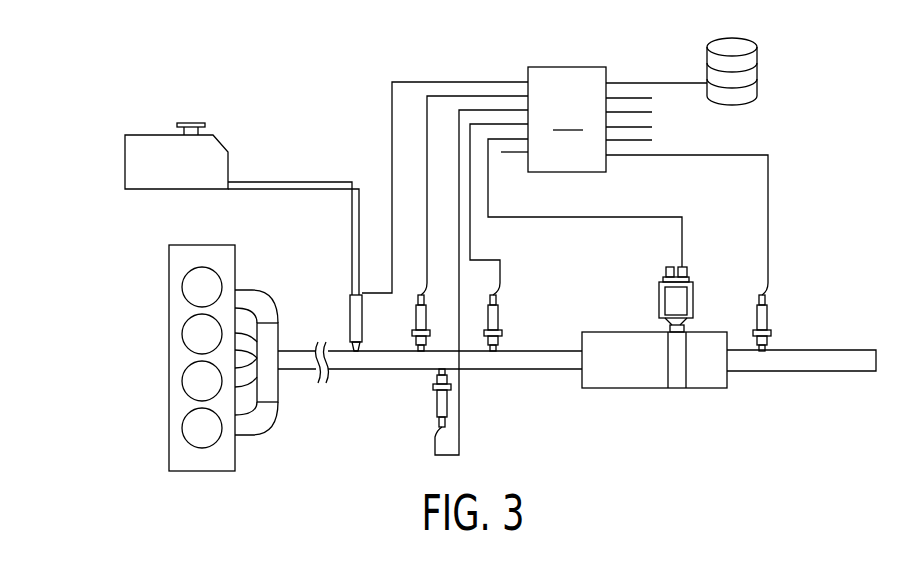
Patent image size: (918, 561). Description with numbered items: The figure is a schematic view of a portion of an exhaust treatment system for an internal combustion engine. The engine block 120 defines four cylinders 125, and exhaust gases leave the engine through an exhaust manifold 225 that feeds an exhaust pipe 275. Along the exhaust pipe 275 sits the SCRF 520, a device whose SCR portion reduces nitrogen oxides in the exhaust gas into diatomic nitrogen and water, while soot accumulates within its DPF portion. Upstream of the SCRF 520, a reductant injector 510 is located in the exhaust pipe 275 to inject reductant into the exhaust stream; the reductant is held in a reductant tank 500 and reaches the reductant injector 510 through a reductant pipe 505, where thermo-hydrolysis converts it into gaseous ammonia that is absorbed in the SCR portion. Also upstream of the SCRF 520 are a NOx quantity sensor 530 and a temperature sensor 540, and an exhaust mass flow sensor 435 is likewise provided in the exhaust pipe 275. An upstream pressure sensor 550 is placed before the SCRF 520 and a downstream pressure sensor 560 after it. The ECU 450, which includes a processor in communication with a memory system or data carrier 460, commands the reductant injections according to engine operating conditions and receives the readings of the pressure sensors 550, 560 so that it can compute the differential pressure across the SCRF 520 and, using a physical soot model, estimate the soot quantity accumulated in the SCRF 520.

The engine block 120 is at (169, 300).
The cylinder 125 is at (187, 423).
The exhaust manifold 225 is at (278, 393).
The exhaust pipe 275 is at (808, 372).
The exhaust mass flow sensor 435 is at (666, 265).
The ECU 450 is at (534, 180).
The data carrier 460 is at (758, 53).
The reductant tank 500 is at (125, 160).
The reductant pipe 505 is at (303, 181).
The reductant injector 510 is at (350, 315).
The SCRF 520 is at (617, 388).
The NOx quantity sensor 530 is at (416, 323).
The temperature sensor 540 is at (436, 402).
The upstream pressure sensor 550 is at (499, 315).
The downstream pressure sensor 560 is at (772, 318).